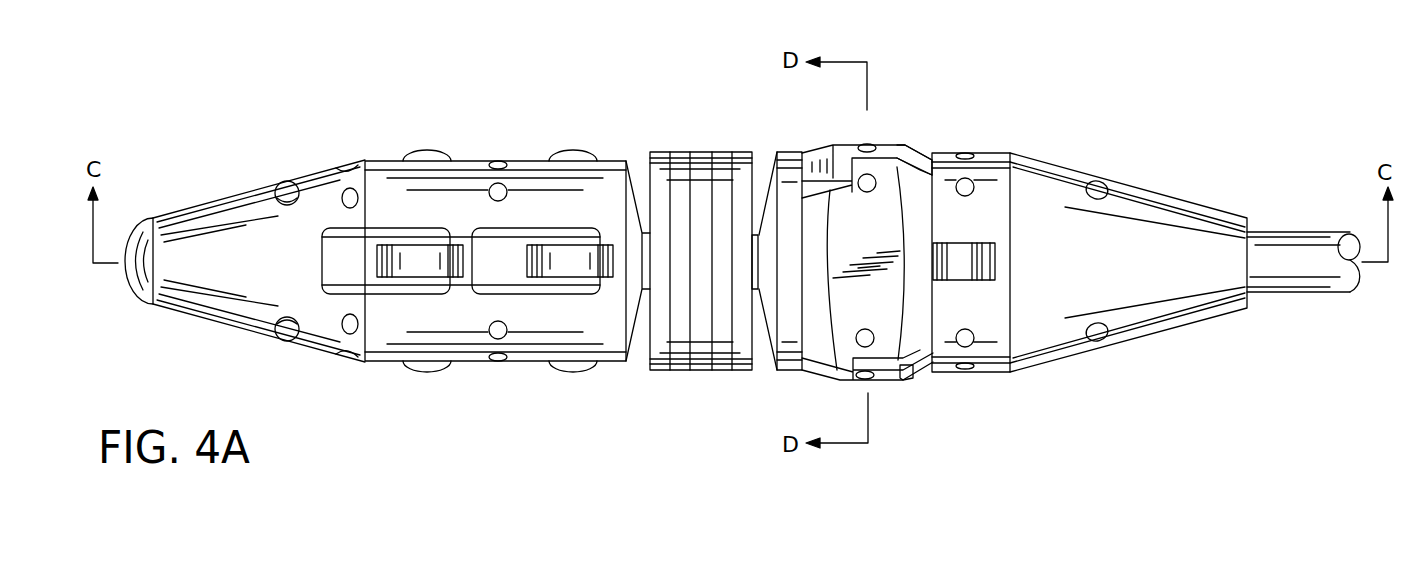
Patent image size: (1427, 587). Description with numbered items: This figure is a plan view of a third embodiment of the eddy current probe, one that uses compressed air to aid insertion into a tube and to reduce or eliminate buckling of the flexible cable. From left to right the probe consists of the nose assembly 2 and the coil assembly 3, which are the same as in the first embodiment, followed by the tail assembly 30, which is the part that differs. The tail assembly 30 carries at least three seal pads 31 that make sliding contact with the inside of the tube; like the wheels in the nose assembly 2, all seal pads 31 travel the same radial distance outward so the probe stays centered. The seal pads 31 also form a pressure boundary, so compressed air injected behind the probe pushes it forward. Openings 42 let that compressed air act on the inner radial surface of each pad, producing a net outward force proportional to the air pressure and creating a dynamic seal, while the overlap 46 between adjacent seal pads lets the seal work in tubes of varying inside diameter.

The nose assembly 2 is at (253, 191).
The coil assembly 3 is at (693, 152).
The tail assembly 30 is at (1120, 183).
The seal pads 31 is at (888, 315).
The openings 42 is at (917, 158).
The overlap 46 is at (843, 158).